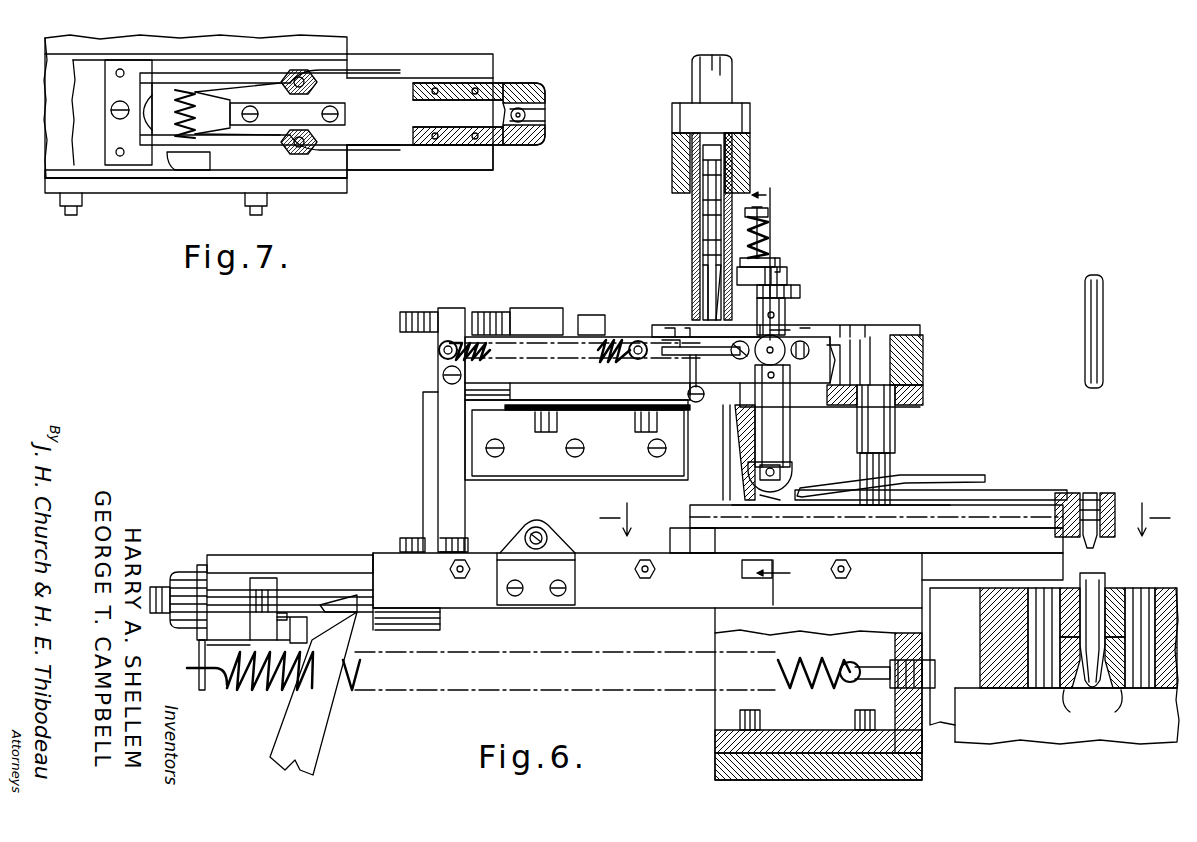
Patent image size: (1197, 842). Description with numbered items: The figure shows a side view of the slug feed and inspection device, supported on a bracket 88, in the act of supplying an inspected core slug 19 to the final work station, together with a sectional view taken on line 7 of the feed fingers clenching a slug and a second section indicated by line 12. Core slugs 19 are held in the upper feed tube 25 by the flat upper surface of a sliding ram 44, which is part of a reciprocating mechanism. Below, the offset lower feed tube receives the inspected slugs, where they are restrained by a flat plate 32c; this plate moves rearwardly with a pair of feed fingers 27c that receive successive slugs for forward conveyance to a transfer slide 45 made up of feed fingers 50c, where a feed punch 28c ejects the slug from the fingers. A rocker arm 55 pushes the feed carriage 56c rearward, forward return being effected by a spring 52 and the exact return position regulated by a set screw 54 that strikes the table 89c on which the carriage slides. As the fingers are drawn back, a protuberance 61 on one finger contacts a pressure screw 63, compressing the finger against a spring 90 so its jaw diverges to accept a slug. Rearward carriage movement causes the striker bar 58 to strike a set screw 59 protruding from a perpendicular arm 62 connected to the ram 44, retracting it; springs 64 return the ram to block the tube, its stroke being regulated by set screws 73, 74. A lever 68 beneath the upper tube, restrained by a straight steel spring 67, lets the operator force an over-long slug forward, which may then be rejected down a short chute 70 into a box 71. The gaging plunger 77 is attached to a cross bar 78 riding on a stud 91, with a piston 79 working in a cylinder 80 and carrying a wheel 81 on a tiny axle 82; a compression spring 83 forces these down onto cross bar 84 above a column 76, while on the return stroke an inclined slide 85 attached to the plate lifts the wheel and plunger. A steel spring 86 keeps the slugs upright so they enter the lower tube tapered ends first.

In FIG. 6, the section line 7— 7 is at (889, 519).
In FIG. 6, the section line 12- 12 is at (771, 391).
In FIG. 7, the core slug 19 is at (512, 102).
In FIG. 6, the core slug 19 is at (706, 248).
In FIG. 6, the upper feed tube 25 is at (724, 86).
In FIG. 7, the feed fingers 27c is at (548, 103).
In FIG. 6, the feed fingers 27c is at (1110, 495).
In FIG. 6, the feed punch 28c is at (1104, 303).
In FIG. 6, the flat plate 32c is at (1020, 490).
In FIG. 6, the sliding ram 44 is at (667, 336).
In FIG. 6, the transfer slide 45 is at (985, 623).
In FIG. 6, the feed fingers of transfer slide 50c is at (1092, 707).
In FIG. 6, the spring 52 is at (235, 690).
In FIG. 6, the set screw 54 is at (320, 605).
In FIG. 6, the rocker arm 55 is at (312, 728).
In FIG. 7, the feed carriage 56c is at (487, 157).
In FIG. 6, the feed carriage 56c is at (250, 562).
In FIG. 7, the striker bar 58 is at (110, 90).
In FIG. 6, the striker bar 58 is at (686, 539).
In FIG. 6, the set screw 59 is at (471, 542).
In FIG. 7, the protuberance 61 is at (192, 168).
In FIG. 6, the protuberance 61 is at (750, 552).
In FIG. 6, the perpendicular arm 62 is at (440, 490).
In FIG. 6, the pressure screw 63 is at (542, 535).
In FIG. 6, the spring 64 is at (620, 343).
In FIG. 6, the straight steel spring 67 is at (688, 368).
In FIG. 6, the lever 68 is at (700, 360).
In FIG. 6, the chute 70 is at (740, 490).
In FIG. 6, the box 71 is at (728, 506).
In FIG. 6, the set screw 73 is at (484, 314).
In FIG. 6, the set screw 74 is at (496, 318).
In FIG. 6, the column 76 is at (787, 307).
In FIG. 6, the plunger 77 is at (765, 262).
In FIG. 6, the cross bar 78 is at (788, 279).
In FIG. 6, the piston-like member 79 is at (780, 270).
In FIG. 6, the cylinder 80 is at (787, 422).
In FIG. 6, the wheel 81 is at (793, 478).
In FIG. 6, the axle 82 is at (783, 470).
In FIG. 6, the compression spring 83 is at (770, 222).
In FIG. 6, the cross bar 84 is at (801, 292).
In FIG. 6, the inclined slide 85 is at (978, 473).
In FIG. 6, the spring 86 is at (880, 340).
In FIG. 6, the bracket 88 is at (742, 119).
In FIG. 7, the table 89c is at (155, 182).
In FIG. 6, the table 89c is at (460, 594).
In FIG. 7, the spring 90 is at (190, 114).
In FIG. 6, the stud 91 is at (768, 208).